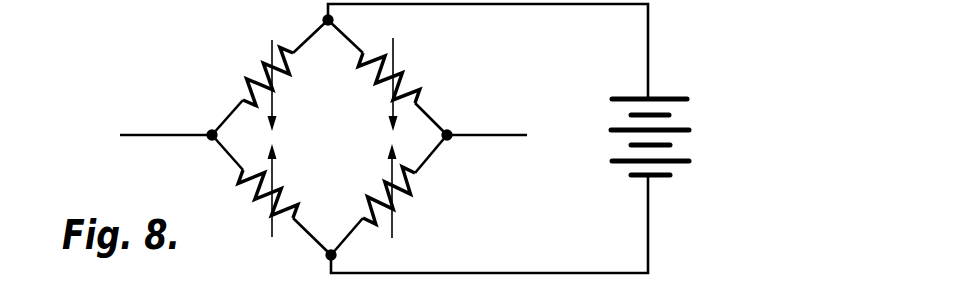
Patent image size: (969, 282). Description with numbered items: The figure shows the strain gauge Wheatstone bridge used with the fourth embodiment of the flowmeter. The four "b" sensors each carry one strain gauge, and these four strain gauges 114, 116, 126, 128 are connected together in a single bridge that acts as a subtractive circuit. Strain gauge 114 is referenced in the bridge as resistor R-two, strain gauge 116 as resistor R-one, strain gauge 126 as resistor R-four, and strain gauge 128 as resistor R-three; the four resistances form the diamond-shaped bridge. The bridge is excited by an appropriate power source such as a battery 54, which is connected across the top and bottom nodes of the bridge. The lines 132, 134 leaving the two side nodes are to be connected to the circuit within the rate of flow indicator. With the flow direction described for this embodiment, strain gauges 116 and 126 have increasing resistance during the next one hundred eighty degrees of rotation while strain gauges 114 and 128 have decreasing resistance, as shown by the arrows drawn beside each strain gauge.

The battery 54 is at (672, 97).
The strain gauge 114 is at (230, 92).
The strain gauge 116 is at (232, 182).
The strain gauge 126 is at (430, 178).
The strain gauge 128 is at (432, 86).
The line 132 is at (162, 135).
The line 134 is at (482, 135).